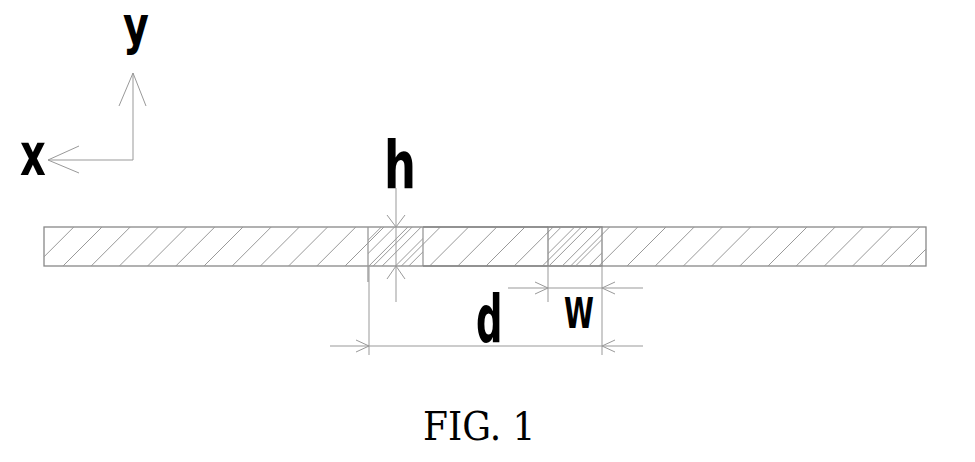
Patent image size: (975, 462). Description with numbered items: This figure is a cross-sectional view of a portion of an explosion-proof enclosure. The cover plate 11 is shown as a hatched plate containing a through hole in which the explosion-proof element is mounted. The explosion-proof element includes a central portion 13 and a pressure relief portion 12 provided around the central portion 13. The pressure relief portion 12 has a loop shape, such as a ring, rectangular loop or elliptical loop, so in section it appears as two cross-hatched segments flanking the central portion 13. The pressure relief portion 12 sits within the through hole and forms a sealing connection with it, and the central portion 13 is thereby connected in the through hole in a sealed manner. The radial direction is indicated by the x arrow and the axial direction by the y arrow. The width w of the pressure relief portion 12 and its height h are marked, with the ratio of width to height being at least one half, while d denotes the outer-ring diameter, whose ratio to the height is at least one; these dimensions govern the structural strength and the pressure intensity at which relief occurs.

The cover plate 11 is at (491, 194).
The pressure relief portion 12 is at (584, 186).
The central portion 13 is at (494, 186).